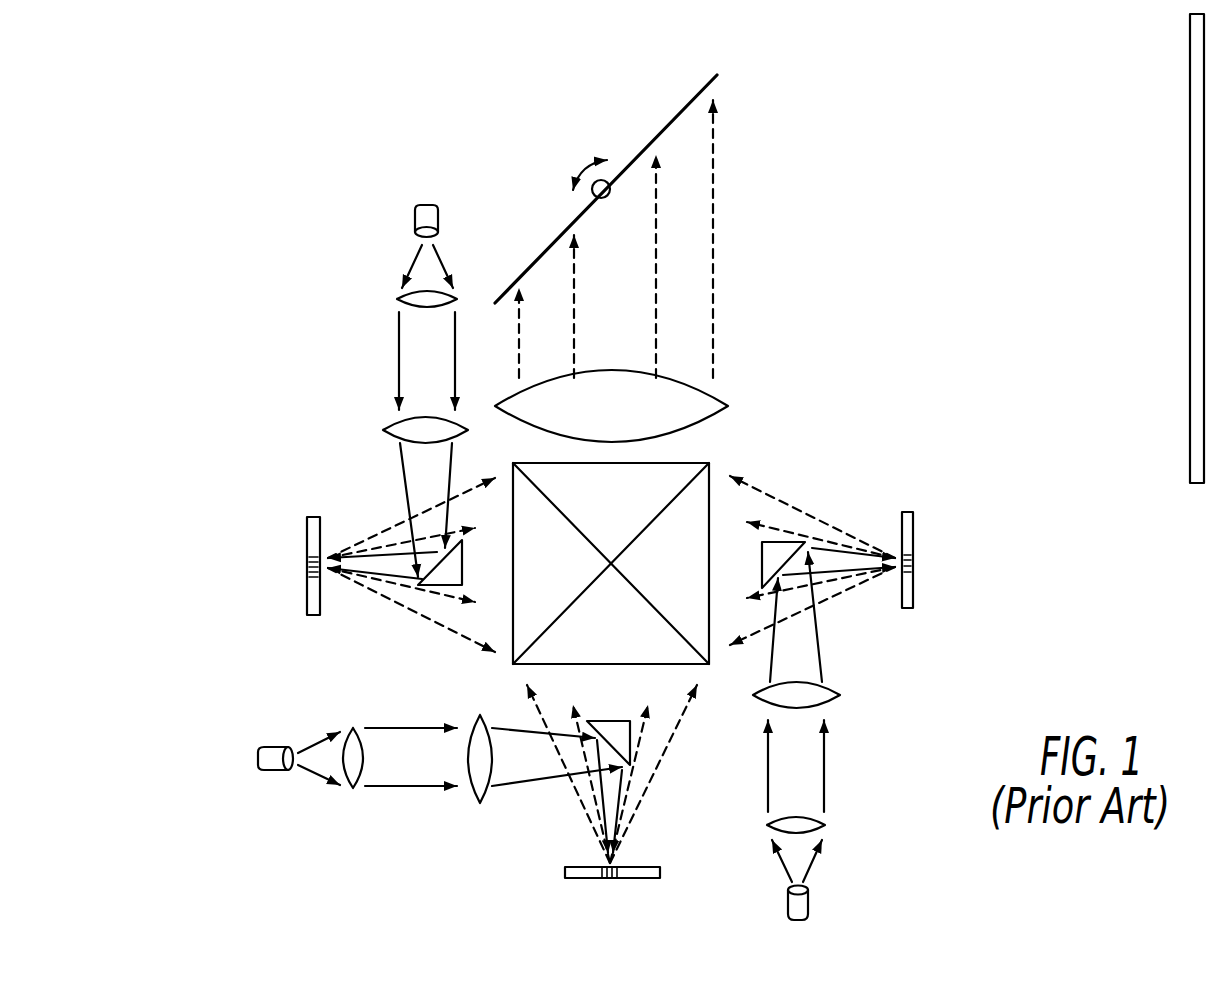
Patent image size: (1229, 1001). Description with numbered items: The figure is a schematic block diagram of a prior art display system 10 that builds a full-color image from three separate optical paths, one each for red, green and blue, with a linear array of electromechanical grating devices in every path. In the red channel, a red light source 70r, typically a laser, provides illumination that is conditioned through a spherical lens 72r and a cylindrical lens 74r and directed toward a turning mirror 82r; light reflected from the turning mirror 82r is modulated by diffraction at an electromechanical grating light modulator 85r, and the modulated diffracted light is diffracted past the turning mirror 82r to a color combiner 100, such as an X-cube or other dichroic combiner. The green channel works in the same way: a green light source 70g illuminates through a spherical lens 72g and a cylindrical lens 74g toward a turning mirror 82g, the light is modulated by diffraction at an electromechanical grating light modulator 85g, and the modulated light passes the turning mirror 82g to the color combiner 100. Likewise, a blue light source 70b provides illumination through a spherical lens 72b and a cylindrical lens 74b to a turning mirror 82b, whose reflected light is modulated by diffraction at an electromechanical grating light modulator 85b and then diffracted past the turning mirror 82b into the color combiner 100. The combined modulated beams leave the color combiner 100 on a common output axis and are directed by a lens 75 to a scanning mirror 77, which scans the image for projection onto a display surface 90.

The display system 10 is at (1068, 125).
The blue light source 70b is at (413, 220).
The spherical lens 72b is at (397, 301).
The cylindrical lens 74b is at (387, 430).
The turning mirror 82b is at (433, 588).
The electromechanical grating light modulator 85b is at (307, 538).
The red light source 70r is at (808, 902).
The spherical lens 72r is at (822, 826).
The cylindrical lens 74r is at (843, 696).
The turning mirror 82r is at (780, 540).
The electromechanical grating light modulator 85r is at (913, 522).
The green light source 70g is at (258, 752).
The spherical lens 72g is at (348, 732).
The cylindrical lens 74g is at (476, 720).
The turning mirror 82g is at (632, 738).
The electromechanical grating light modulator 85g is at (642, 878).
The color combiner 100 is at (709, 462).
The lens 75 is at (598, 371).
The scanning mirror 77 is at (654, 132).
The display surface 90 is at (1190, 250).